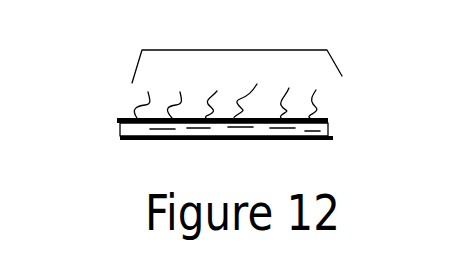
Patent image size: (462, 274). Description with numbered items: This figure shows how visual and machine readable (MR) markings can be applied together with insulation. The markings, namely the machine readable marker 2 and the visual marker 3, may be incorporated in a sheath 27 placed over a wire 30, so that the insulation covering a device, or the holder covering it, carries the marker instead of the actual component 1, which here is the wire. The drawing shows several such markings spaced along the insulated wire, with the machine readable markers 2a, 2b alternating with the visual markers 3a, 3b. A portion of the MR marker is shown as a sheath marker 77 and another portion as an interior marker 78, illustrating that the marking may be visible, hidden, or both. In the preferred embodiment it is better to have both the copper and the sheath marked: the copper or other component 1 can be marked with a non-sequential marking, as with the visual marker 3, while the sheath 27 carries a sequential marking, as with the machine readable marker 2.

The component 1 is at (118, 124).
The machine readable marker 2 is at (142, 98).
The visual marker 3 is at (174, 98).
The machine readable marker 2a is at (218, 98).
The visual marker 3a is at (247, 94).
The machine readable marker 2b is at (288, 96).
The visual marker 3b is at (321, 96).
The sheath marker 77 is at (222, 50).
The interior marker 78 is at (262, 139).
The wire 30 is at (328, 121).
The sheath 27 is at (333, 138).